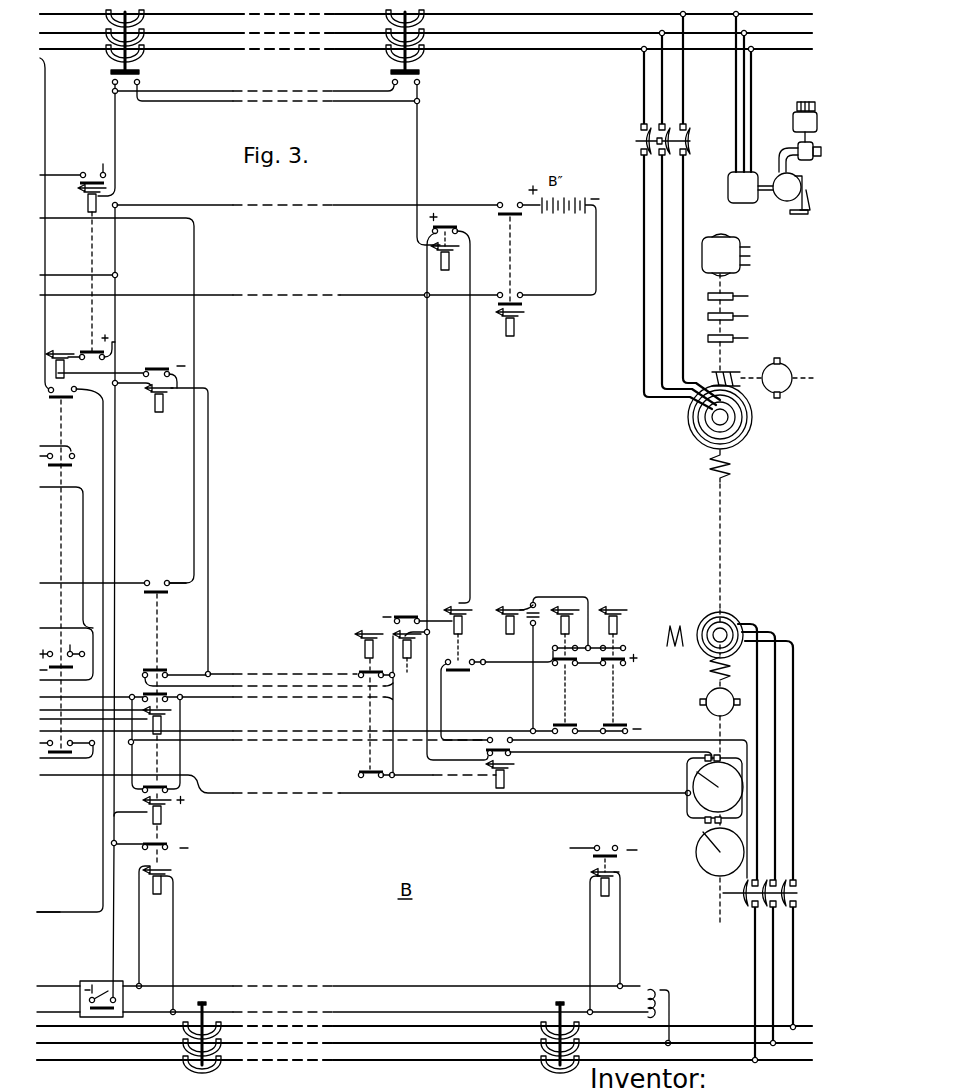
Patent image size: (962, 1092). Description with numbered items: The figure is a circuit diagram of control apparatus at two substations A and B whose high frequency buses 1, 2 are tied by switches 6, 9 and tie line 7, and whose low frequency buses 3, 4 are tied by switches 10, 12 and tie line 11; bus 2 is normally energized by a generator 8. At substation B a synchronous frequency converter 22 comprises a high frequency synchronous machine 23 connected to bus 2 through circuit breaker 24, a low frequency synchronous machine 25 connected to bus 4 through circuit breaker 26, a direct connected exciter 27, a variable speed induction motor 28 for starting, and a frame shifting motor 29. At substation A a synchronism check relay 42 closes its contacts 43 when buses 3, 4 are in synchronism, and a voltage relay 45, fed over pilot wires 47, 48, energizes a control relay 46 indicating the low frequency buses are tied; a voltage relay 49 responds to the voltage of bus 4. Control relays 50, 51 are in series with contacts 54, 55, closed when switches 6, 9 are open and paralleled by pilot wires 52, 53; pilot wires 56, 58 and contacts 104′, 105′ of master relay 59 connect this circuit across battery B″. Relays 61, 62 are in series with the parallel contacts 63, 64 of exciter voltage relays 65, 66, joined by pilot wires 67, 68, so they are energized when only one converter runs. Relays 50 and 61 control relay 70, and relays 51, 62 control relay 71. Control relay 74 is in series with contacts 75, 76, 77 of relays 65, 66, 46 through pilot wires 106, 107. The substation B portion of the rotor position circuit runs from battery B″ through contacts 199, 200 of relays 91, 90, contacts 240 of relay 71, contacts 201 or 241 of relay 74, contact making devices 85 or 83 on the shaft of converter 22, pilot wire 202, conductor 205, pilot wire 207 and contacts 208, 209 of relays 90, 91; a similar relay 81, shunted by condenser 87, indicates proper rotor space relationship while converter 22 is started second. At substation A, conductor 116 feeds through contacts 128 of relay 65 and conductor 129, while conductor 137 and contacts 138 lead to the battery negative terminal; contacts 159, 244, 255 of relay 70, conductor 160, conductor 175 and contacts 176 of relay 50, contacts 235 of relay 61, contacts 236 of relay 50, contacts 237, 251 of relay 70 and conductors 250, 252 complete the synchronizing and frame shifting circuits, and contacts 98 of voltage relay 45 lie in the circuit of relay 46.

The high frequency bus 1 is at (52, 50).
The high frequency bus 2 is at (578, 17).
The low frequency bus 3 is at (81, 1030).
The low frequency bus 4 is at (693, 1062).
The switch 6 is at (134, 56).
The tie line 7 is at (383, 15).
The prime mover driven generator 8 is at (746, 198).
The switch 9 is at (414, 55).
The switch 10 is at (201, 1004).
The tie line 11 is at (390, 1030).
The switch 12 is at (558, 1004).
The synchronous frequency converter 22 is at (670, 449).
The high frequency synchronous machine 23 is at (747, 429).
The circuit breaker 24 is at (678, 140).
The low frequency synchronous machine 25 is at (728, 612).
The circuit breaker 26 is at (743, 900).
The direct connected exciter 27 is at (703, 708).
The variable speed induction motor 28 is at (729, 265).
The frame shifting motor 29 is at (789, 370).
The synchronism check relay 42 is at (92, 980).
The contacts 43 is at (100, 996).
The voltage relay 45 is at (156, 892).
The control relay 46 is at (164, 819).
The pilot wire 47 is at (48, 986).
The pilot wire 48 is at (48, 1012).
The voltage relay 49 is at (605, 892).
The control relay 50 is at (85, 198).
The control relay 51 is at (443, 272).
The pilot wire 52 is at (209, 104).
The pilot wire 53 is at (198, 94).
The contacts 54 is at (112, 83).
The contacts 55 is at (420, 84).
The pilot wire 56 is at (366, 292).
The pilot wire 58 is at (367, 203).
The master relay 59 is at (517, 332).
The relay 61 is at (153, 410).
The relay 62 is at (410, 660).
The contacts 63 is at (141, 674).
The contacts 64 is at (358, 672).
The exciter voltage relay 65 is at (158, 718).
The exciter voltage relay 66 is at (365, 637).
The pilot wire 67 is at (220, 671).
The pilot wire 68 is at (225, 686).
The control relay 70 is at (65, 353).
The control relay 71 is at (456, 609).
The control relay 74 is at (510, 776).
The contacts 75 is at (137, 694).
The contacts 76 is at (377, 779).
The contacts 77 is at (145, 793).
The relay 81 is at (510, 609).
The contact making device 83 is at (701, 840).
The contact making device 85 is at (723, 761).
The condenser 87 is at (543, 612).
The relay 90 is at (568, 609).
The relay 91 is at (616, 609).
The contacts 98 is at (143, 850).
The contacts 104′ is at (503, 202).
The contacts 105′ is at (521, 287).
The pilot wire 106 is at (225, 702).
The pilot wire 107 is at (210, 742).
The conductor 116 is at (47, 580).
The contacts 128 is at (166, 578).
The conductor 129 is at (72, 220).
The conductor 137 is at (45, 446).
The contacts 138 is at (46, 488).
The contacts 159 is at (67, 670).
The conductor 160 is at (48, 645).
The conductor 175 is at (60, 171).
The contacts 176 is at (103, 170).
The contacts 199 is at (620, 669).
The contacts 200 is at (575, 669).
The contacts 201 is at (490, 749).
The pilot wire 202 is at (57, 777).
The conductor 205 is at (48, 628).
The pilot wire 207 is at (57, 729).
The contacts 208 is at (558, 725).
The contacts 209 is at (619, 726).
The contacts 235 is at (169, 378).
The contacts 236 is at (102, 359).
The contacts 237 is at (71, 743).
The contacts 240 is at (472, 660).
The contacts 241 is at (514, 742).
The contacts 244 is at (73, 644).
The conductor 250 is at (53, 912).
The contacts 251 is at (75, 389).
The conductor 252 is at (46, 82).
The contacts 255 is at (71, 472).